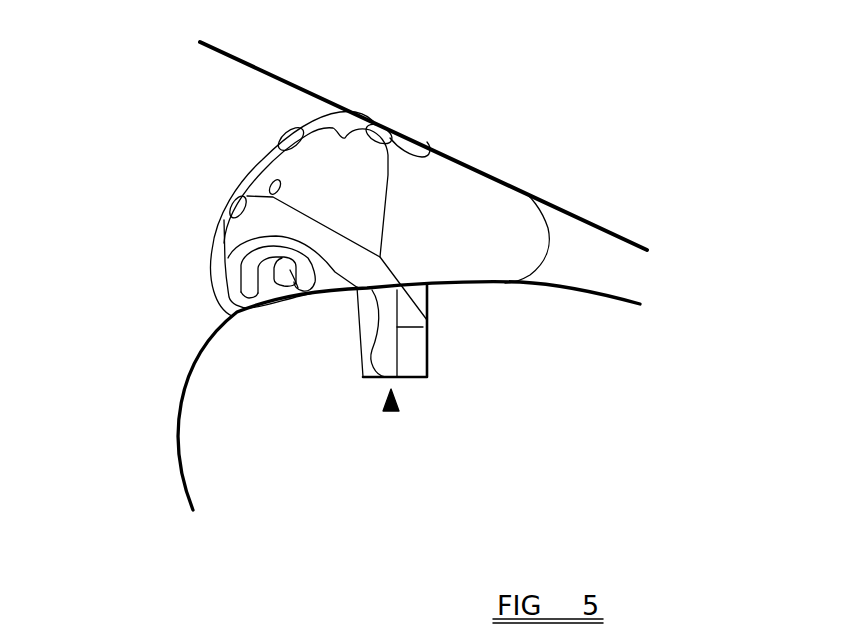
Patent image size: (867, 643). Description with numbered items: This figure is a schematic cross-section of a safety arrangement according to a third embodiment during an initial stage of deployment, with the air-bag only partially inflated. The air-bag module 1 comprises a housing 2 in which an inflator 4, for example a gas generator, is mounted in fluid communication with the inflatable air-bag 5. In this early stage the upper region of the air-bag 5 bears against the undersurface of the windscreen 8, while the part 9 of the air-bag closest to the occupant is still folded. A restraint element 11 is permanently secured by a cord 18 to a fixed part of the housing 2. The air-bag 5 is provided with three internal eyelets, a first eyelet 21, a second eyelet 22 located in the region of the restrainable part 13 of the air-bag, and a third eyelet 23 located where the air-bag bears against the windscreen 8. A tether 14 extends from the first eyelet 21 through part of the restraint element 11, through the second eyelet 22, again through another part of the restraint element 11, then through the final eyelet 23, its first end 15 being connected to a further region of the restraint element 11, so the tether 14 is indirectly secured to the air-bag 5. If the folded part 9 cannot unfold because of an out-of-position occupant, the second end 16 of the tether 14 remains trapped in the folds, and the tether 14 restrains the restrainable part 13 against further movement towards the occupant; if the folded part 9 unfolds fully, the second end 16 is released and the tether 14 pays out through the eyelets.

The air-bag module 1 is at (390, 410).
The housing 2 is at (366, 380).
The inflator 4 is at (426, 357).
The air-bag 5 is at (547, 253).
The windscreen 8 is at (577, 216).
The folded part of the air-bag 9 is at (210, 258).
The restraint element 11 is at (360, 196).
The restrainable part of the air-bag 13 is at (258, 163).
The tether 14 is at (218, 244).
The first end of the tether 15 is at (388, 152).
The second end of the tether 16 is at (313, 292).
The cord 18 is at (483, 283).
The first eyelet 21 is at (230, 220).
The second eyelet 22 is at (291, 132).
The third eyelet 23 is at (366, 121).